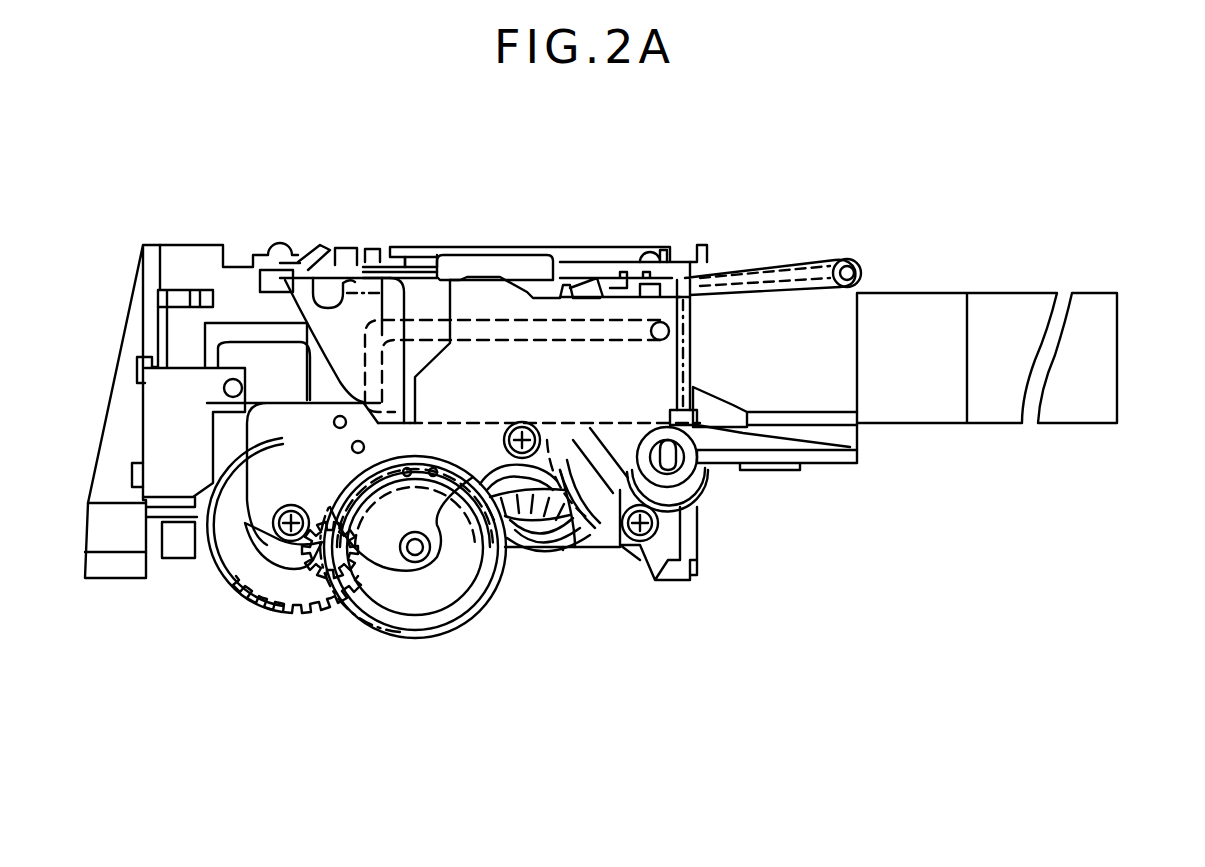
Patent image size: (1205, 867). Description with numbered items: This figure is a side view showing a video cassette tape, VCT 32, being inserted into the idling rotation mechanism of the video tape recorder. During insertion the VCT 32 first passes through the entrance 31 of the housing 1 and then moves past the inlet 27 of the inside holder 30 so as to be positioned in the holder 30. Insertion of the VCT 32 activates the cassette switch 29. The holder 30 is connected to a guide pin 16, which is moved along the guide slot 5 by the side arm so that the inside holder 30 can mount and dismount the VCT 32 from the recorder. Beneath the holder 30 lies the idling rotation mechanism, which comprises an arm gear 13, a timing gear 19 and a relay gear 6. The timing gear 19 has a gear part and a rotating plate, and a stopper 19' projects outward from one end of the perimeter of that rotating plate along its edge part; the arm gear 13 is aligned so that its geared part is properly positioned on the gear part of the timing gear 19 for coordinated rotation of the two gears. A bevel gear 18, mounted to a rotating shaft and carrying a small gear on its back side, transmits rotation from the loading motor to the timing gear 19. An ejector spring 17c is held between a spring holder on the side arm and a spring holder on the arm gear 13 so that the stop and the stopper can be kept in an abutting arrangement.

The VTR housing 1 is at (595, 250).
The guide slot 5 is at (383, 283).
The relay gear 6 is at (703, 480).
The arm gear 13 is at (563, 550).
The guide pin 16 is at (672, 331).
The ejector spring 17c is at (530, 550).
The bevel gear 18 is at (250, 583).
The timing gear 19 is at (413, 584).
The stopper 19' is at (320, 609).
The inlet 27 is at (677, 280).
The cassette switch 29 is at (327, 295).
The inside holder 30 is at (481, 307).
The entrance 31 is at (860, 313).
The VCT 32 is at (1105, 352).